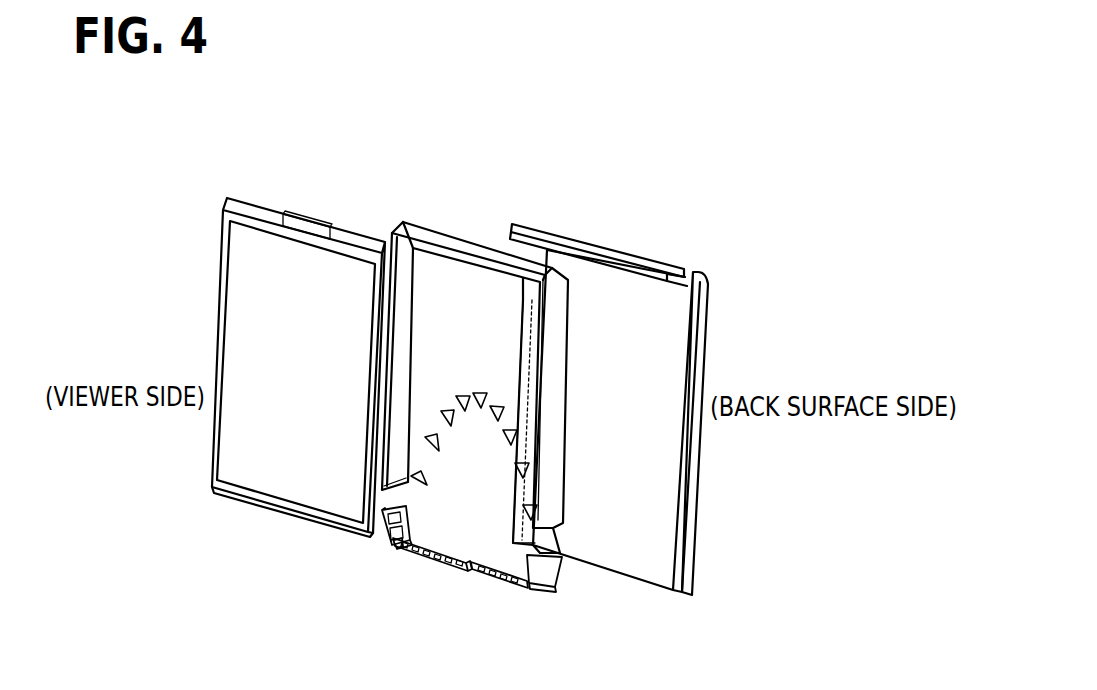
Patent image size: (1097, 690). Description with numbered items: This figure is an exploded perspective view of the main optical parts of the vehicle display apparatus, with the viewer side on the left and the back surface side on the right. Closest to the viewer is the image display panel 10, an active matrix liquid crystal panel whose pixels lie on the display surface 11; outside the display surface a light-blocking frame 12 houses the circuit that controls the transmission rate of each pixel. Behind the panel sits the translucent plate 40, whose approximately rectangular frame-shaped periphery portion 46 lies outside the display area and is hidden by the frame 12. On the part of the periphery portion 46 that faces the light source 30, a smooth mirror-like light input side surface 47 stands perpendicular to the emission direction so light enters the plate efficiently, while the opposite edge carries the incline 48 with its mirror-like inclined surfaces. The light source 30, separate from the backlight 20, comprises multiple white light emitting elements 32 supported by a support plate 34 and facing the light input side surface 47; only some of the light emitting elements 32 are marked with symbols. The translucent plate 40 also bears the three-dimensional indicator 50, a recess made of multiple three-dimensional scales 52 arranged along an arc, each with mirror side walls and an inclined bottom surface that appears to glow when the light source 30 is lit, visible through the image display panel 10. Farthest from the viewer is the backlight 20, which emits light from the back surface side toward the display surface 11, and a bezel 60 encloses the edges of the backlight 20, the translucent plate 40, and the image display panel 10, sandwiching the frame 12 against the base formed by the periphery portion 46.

The image display panel 10 is at (276, 334).
The display surface 11 is at (230, 256).
The frame 12 is at (282, 218).
The backlight 20 is at (609, 405).
The light source 30 is at (429, 598).
The light emitting element 32 is at (453, 556).
The support plate 34 is at (415, 558).
The translucent plate 40 is at (401, 361).
The periphery portion 46 is at (401, 222).
The light input side surface 47 is at (400, 548).
The incline 48 is at (456, 243).
The three-dimensional indicator 50 is at (491, 299).
The three-dimensional scale 52 is at (484, 393).
The bezel 60 is at (608, 247).